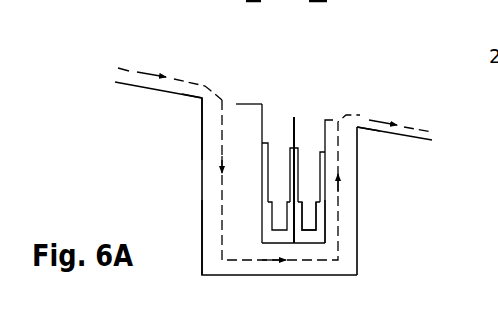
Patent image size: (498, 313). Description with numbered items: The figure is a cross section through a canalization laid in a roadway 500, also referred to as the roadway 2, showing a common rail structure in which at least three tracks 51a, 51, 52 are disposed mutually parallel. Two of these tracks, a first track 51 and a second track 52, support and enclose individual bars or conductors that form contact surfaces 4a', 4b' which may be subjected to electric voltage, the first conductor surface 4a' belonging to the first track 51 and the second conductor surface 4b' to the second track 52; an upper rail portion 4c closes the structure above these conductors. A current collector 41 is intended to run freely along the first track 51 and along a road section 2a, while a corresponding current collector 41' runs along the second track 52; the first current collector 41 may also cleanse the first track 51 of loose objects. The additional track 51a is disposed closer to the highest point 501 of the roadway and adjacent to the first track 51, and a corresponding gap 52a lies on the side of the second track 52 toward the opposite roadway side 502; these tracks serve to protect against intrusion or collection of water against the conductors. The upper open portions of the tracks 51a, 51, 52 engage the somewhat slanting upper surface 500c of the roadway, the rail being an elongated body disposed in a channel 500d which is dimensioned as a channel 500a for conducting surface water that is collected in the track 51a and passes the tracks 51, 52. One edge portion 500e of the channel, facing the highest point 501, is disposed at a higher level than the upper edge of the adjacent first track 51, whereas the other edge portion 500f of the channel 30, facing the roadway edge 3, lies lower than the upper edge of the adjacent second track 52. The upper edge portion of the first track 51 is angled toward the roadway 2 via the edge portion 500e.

The roadway 2 is at (137, 82).
The opening in upper wall 2a is at (224, 78).
The lower wall 3 is at (406, 139).
The first conductor surface 4a' is at (242, 250).
The second conductor surface 4b' is at (372, 221).
The top portion of electrode holder 4c is at (238, 103).
The channel 30 is at (370, 158).
The current collector 41 is at (213, 145).
The current collector 41' is at (389, 209).
The first track 51 is at (275, 132).
The additional track 51a is at (192, 185).
The second track 52 is at (307, 132).
The gap adjacent inner electrode 52 52a is at (350, 180).
The roadway 500 is at (165, 91).
The channel 500a is at (203, 213).
The slanting upper surface 500c is at (192, 96).
The channel 500d is at (192, 134).
The one edge portion of channel 500e is at (199, 102).
The other edge portion of channel 500f is at (364, 127).
The highest point 501 is at (132, 60).
The air outlet 502 is at (407, 119).